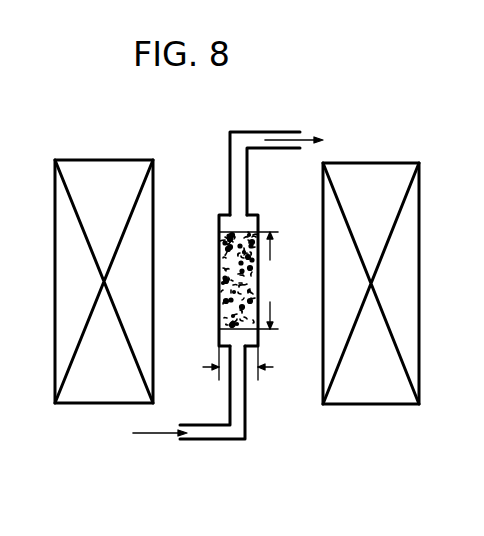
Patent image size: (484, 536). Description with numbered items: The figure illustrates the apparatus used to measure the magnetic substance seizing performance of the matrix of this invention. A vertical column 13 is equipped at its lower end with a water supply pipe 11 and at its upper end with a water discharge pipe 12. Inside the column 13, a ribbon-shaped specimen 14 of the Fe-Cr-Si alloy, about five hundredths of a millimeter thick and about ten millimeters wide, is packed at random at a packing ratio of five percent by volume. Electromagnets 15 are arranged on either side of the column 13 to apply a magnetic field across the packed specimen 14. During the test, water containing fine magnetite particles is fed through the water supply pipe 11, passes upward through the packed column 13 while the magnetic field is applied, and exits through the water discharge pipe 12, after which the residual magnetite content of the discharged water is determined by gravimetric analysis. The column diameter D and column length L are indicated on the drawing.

The water supply pipe 11 is at (245, 437).
The water discharge pipe 12 is at (279, 132).
The column 13 is at (219, 294).
The ribbon-shaped specimen 14 is at (222, 250).
The electromagnets 15 is at (112, 160).